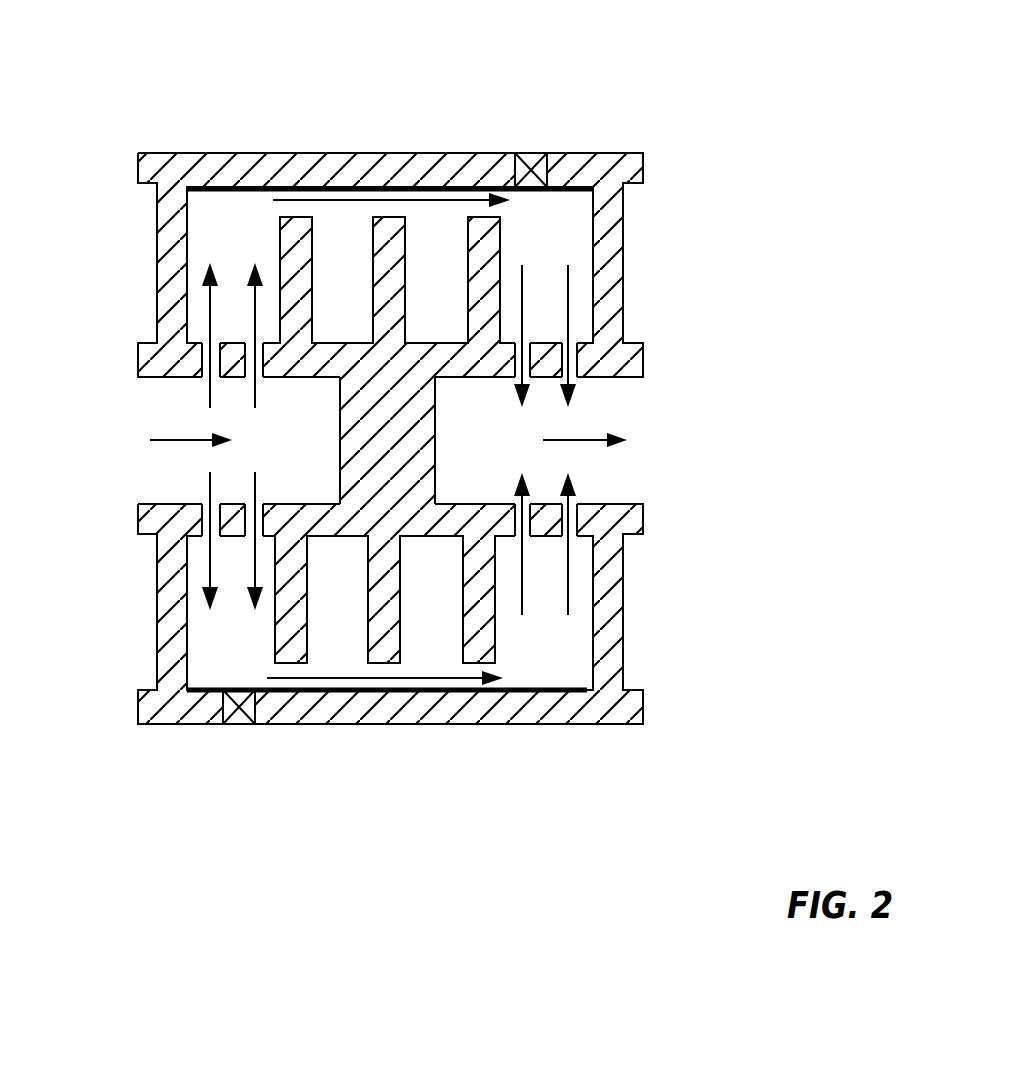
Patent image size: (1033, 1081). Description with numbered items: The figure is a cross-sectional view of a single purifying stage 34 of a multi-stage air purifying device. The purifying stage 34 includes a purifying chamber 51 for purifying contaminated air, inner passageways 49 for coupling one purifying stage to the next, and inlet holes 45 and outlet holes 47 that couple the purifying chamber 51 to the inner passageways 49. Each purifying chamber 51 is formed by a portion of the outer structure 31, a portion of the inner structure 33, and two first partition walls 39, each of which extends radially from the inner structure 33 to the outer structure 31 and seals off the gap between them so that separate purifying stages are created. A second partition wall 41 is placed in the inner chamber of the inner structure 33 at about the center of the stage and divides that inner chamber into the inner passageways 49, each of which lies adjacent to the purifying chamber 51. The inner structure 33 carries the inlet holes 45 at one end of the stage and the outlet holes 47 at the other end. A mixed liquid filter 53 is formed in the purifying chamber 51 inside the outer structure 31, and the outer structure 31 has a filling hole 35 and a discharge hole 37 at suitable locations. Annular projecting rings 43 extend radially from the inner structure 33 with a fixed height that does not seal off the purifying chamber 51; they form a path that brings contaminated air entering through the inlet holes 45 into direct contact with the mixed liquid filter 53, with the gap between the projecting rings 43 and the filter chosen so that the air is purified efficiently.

The outer structure 31 is at (517, 727).
The inner structure 33 is at (344, 540).
The purifying stage 34 is at (730, 55).
The filling hole 35 is at (530, 162).
The discharge hole 37 is at (243, 727).
The first partition wall 39 is at (625, 220).
The second partition wall 41 is at (437, 427).
The annular projecting ring 43 is at (490, 643).
The inlet hole 45 is at (207, 345).
The outlet hole 47 is at (573, 345).
The inner passageway 49 is at (188, 464).
The purifying chamber 51 is at (569, 218).
The mixed liquid filter 53 is at (264, 186).